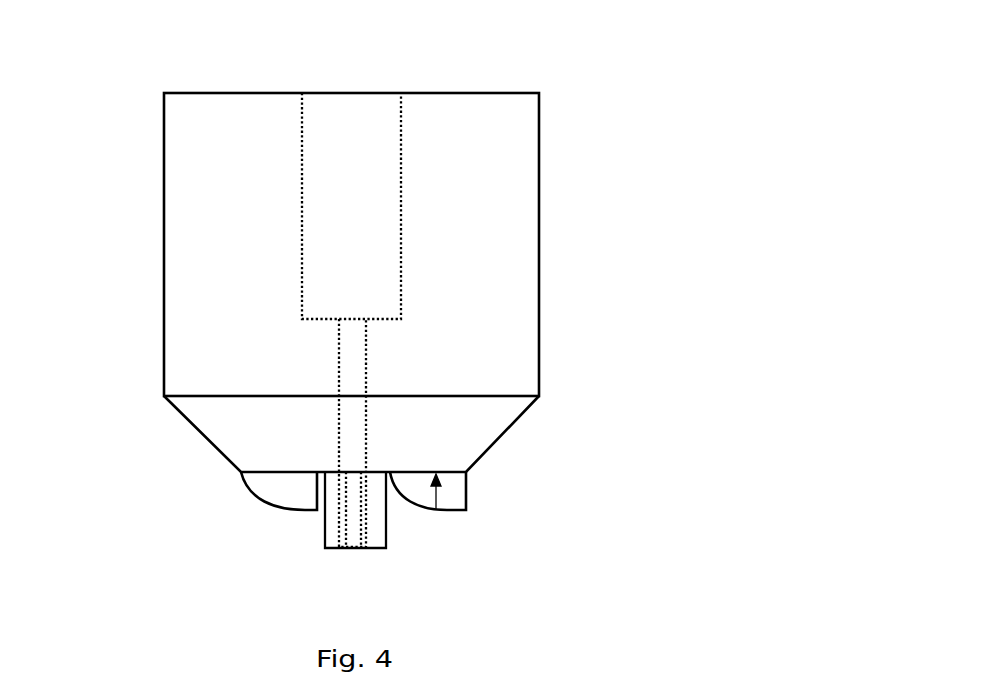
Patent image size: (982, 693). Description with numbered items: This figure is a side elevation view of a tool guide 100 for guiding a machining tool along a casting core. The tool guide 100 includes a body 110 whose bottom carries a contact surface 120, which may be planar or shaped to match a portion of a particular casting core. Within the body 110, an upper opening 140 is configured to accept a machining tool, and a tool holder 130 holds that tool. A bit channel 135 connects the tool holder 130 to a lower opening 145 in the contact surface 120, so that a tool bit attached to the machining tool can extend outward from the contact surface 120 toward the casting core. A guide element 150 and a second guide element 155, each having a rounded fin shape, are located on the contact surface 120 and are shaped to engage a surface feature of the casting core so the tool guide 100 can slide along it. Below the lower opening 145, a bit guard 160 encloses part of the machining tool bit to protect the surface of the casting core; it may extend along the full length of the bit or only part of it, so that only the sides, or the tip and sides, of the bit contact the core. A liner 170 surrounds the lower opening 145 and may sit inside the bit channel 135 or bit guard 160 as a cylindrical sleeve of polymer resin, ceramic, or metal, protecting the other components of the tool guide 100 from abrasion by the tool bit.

The tool guide 100 is at (666, 68).
The body 110 is at (540, 128).
The contact surface 120 is at (436, 510).
The tool holder 130 is at (302, 207).
The bit channel 135 is at (339, 370).
The upper opening 140 is at (352, 84).
The lower opening 145 is at (351, 463).
The guide element 150 is at (247, 490).
The second guide element 155 is at (468, 490).
The bit guard 160 is at (323, 527).
The liner 170 is at (365, 527).